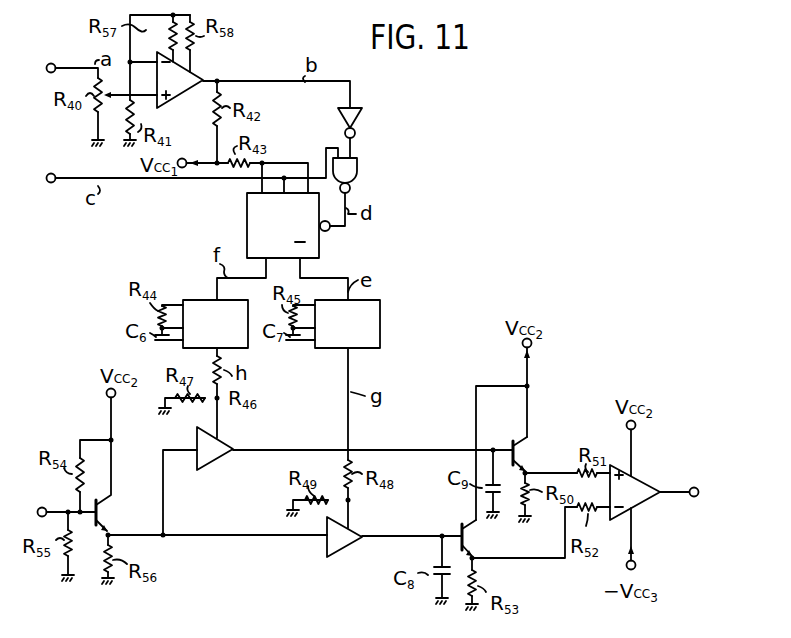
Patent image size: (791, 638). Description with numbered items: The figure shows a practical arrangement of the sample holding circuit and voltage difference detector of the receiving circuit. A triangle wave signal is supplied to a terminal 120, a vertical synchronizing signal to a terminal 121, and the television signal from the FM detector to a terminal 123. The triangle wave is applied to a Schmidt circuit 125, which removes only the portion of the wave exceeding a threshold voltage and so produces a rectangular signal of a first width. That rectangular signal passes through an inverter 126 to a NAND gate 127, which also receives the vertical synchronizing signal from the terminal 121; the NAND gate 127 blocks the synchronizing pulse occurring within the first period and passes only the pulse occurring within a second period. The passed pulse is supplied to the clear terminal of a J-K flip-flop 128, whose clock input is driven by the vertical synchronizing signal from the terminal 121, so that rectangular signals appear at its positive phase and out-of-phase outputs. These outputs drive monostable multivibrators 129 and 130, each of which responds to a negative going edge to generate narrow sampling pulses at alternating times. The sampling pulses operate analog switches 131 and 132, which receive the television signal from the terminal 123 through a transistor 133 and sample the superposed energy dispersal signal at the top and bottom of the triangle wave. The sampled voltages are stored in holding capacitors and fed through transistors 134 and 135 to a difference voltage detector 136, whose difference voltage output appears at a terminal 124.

The terminal 120 is at (46, 66).
The terminal 121 is at (46, 176).
The terminal 123 is at (36, 508).
The terminal 124 is at (694, 497).
The Schmidt circuit 125 is at (200, 69).
The inverter 126 is at (360, 118).
The NAND gate 127 is at (357, 170).
The J-K flip-flop 128 is at (320, 241).
The monostable multivibrator 129 is at (248, 348).
The monostable multivibrator 130 is at (380, 325).
The analog switch 131 is at (222, 440).
The analog switch 132 is at (356, 528).
The transistor 133 is at (104, 504).
The transistor 134 is at (522, 450).
The transistor 135 is at (476, 540).
The difference voltage detector 136 is at (643, 478).